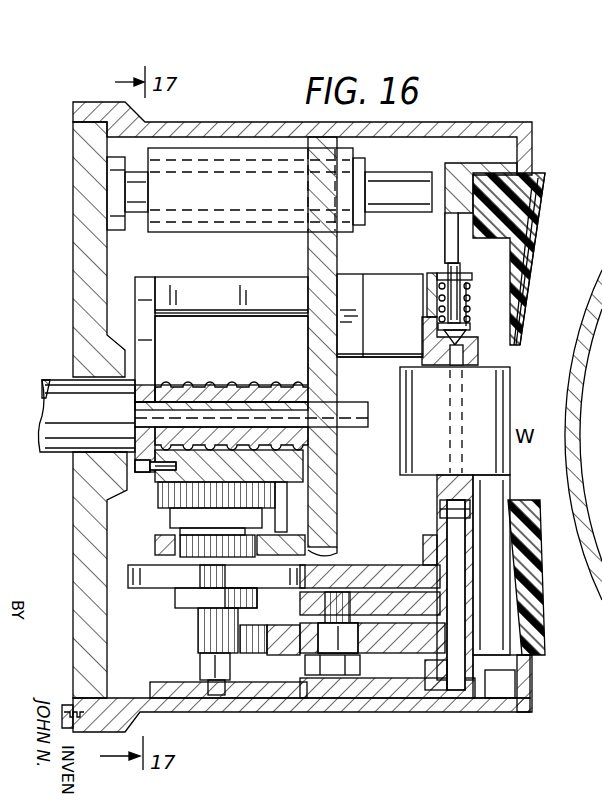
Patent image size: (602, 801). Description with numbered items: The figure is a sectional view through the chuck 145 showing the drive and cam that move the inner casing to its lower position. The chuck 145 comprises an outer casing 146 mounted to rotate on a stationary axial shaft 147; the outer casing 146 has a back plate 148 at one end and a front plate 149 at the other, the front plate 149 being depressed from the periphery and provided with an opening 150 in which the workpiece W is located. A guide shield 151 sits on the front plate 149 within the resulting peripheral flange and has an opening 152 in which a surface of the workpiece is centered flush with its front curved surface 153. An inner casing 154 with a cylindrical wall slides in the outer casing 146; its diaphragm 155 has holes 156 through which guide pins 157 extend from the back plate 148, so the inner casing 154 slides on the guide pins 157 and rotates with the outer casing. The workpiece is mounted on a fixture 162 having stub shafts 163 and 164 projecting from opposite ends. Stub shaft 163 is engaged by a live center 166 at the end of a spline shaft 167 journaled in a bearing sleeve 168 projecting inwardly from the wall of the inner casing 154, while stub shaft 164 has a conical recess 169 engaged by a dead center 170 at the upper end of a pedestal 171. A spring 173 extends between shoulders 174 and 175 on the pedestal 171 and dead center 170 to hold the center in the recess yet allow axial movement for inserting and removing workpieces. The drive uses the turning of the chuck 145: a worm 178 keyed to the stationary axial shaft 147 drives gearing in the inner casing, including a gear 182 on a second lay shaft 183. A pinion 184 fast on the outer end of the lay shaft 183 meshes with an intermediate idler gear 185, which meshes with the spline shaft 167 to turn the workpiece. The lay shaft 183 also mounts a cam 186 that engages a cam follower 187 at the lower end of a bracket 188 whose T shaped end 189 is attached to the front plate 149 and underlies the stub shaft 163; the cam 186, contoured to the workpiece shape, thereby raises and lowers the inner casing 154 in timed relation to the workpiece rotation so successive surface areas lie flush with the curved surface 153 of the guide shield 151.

The chuck 145 is at (68, 134).
The outer casing 146 is at (432, 712).
The stationary axial shaft 147 is at (352, 435).
The back plate 148 is at (73, 290).
The front plate 149 is at (497, 217).
The opening 150 is at (455, 215).
The guide shield 151 is at (540, 178).
The opening 152 is at (517, 348).
The front curved surface 153 is at (532, 262).
The inner casing 154 is at (255, 712).
The diaphragm 155 is at (308, 264).
The holes 156 is at (190, 228).
The guide pins 157 is at (415, 158).
The fixture 162 is at (412, 357).
The stub shaft 163 is at (437, 482).
The stub shaft 164 is at (420, 343).
The live center 166 is at (442, 500).
The spline shaft 167 is at (536, 640).
The bearing sleeve 168 is at (478, 685).
The conical recess 169 is at (455, 348).
The dead center 170 is at (458, 345).
The pedestal 171 is at (398, 266).
The spring 173 is at (470, 300).
The shoulder 174 is at (470, 284).
The shoulder 175 is at (448, 330).
The worm 178 is at (250, 385).
The gear 182 is at (185, 488).
The second lay shaft 183 is at (205, 668).
The pinion 184 is at (200, 632).
The intermediate idler gear 185 is at (252, 628).
The cam 186 is at (128, 575).
The cam follower 187 is at (320, 560).
The bracket 188 is at (410, 580).
The T shaped end 189 is at (445, 547).